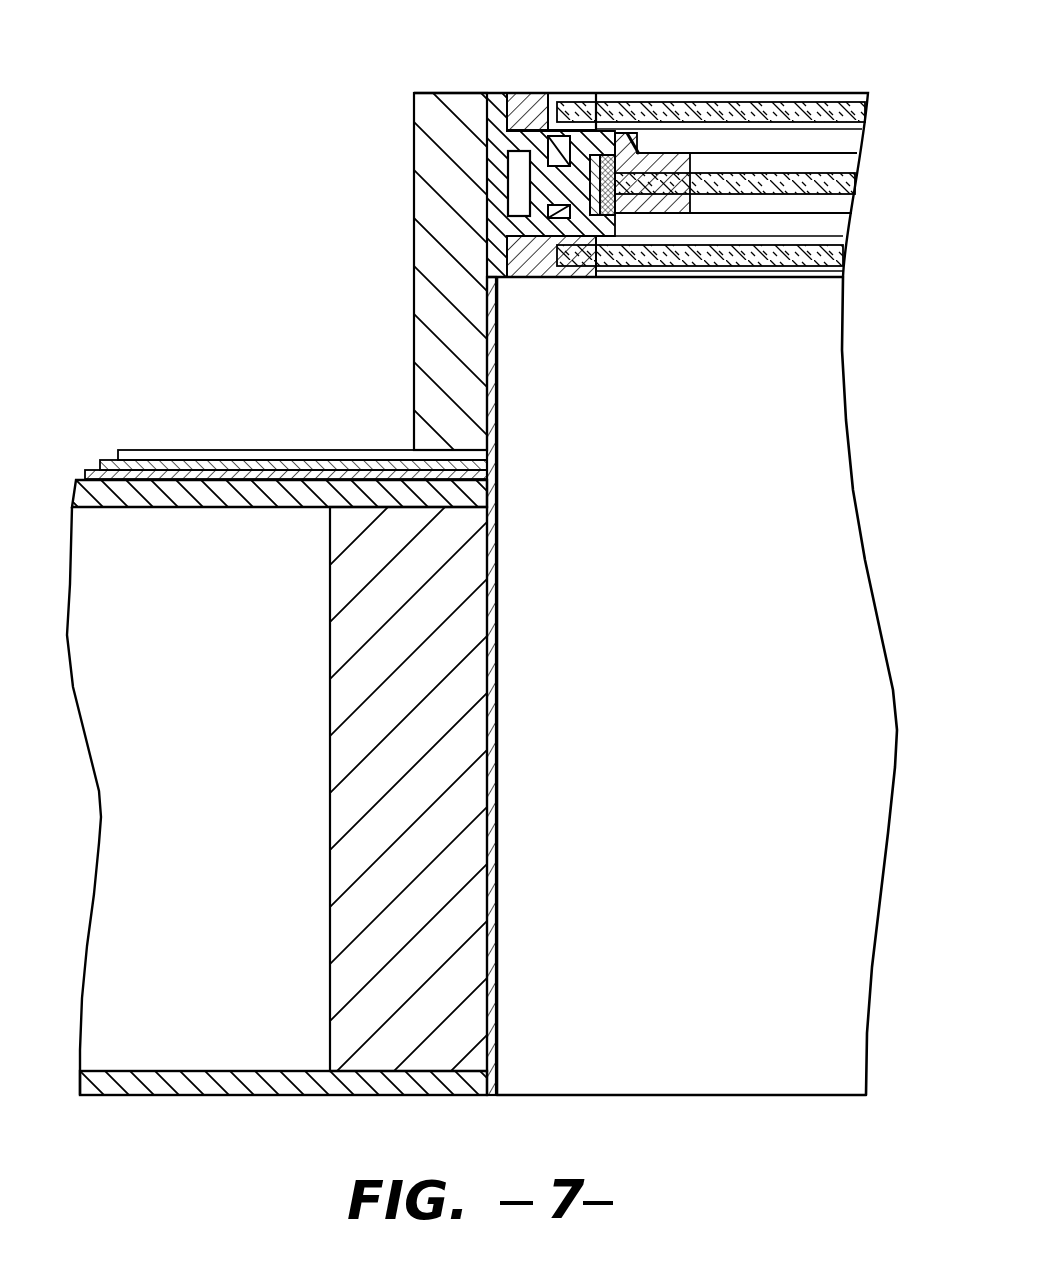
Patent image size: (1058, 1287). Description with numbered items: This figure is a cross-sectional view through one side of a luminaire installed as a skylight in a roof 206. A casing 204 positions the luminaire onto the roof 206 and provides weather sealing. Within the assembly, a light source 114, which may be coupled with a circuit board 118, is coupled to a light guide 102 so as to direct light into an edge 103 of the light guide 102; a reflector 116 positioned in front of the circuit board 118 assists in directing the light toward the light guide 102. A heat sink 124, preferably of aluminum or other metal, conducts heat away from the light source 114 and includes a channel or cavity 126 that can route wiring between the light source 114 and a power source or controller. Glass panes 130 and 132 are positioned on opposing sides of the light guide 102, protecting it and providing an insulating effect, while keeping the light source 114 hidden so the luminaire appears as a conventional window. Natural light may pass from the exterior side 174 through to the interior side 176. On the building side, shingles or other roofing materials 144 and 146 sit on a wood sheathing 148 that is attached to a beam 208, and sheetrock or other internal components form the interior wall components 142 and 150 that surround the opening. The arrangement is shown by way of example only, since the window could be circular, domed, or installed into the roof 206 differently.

The light guide 102 is at (812, 183).
The edge of light guide 103 is at (624, 203).
The light source 114 is at (614, 216).
The reflector 116 is at (600, 154).
The circuit board 118 is at (590, 156).
The heat sink 124 is at (499, 94).
The channel or cavity 126 is at (518, 177).
The glass pane 130 is at (683, 102).
The glass pane 132 is at (722, 255).
The interior wall component 142 is at (494, 666).
The roofing material 144 is at (108, 461).
The roofing material 146 is at (87, 472).
The wood sheathing 148 is at (180, 494).
The interior wall component 150 is at (228, 1086).
The exterior side 174 is at (800, 286).
The interior side 176 is at (772, 70).
The casing 204 is at (432, 299).
The roof 206 is at (94, 436).
The beam 208 is at (447, 753).